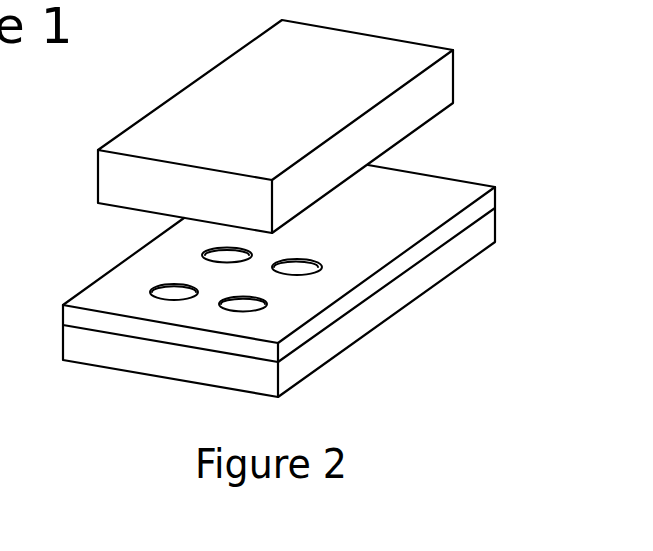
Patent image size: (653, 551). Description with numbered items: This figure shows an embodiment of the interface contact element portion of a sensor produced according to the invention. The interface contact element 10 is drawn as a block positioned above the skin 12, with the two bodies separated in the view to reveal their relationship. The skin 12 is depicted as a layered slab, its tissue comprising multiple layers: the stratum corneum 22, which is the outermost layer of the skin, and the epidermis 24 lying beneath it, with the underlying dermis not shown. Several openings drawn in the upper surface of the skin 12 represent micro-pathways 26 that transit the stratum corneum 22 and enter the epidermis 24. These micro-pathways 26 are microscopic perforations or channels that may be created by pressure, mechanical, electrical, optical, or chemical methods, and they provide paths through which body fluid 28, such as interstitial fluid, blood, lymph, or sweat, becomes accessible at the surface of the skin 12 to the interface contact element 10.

The interface contact element 10 is at (385, 37).
The skin 12 is at (285, 281).
The stratum corneum 22 is at (495, 192).
The epidermis 24 is at (495, 226).
The micro-pathways 26 is at (263, 307).
The body fluid 28 is at (227, 256).